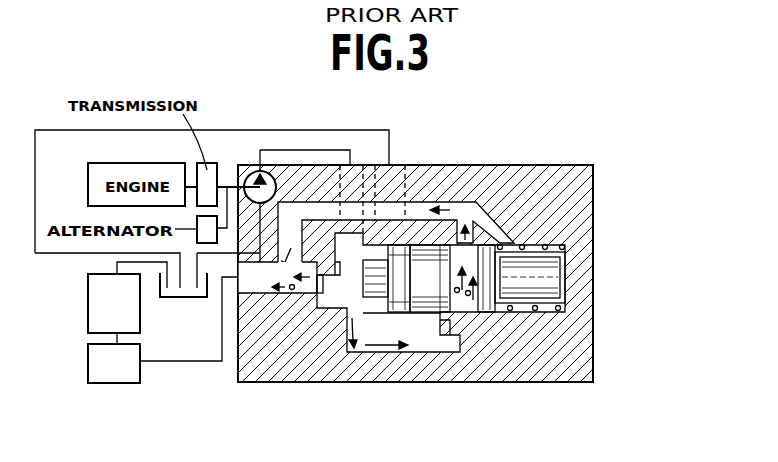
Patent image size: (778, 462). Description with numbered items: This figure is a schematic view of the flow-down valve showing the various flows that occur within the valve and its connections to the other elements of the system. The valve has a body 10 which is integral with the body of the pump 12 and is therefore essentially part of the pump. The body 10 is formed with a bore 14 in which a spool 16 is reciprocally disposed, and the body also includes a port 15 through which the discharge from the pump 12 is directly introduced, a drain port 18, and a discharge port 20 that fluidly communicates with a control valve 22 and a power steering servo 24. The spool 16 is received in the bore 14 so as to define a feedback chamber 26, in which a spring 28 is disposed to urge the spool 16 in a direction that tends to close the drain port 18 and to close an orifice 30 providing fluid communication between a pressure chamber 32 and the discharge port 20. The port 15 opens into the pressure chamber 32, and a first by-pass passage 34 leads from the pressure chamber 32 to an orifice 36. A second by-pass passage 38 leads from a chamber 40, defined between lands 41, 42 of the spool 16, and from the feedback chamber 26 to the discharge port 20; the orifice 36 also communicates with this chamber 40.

The body 10 is at (590, 383).
The pump 12 is at (246, 162).
The bore 14 is at (522, 314).
The port 15 is at (348, 177).
The spool 16 is at (538, 294).
The drain port 18 is at (395, 168).
The discharge port 20 is at (245, 288).
The control valve 22 is at (88, 368).
The power steering servo 24 is at (88, 320).
The feedback chamber 26 is at (567, 292).
The spring 28 is at (567, 250).
The orifice 30 is at (318, 292).
The pressure chamber 32 is at (340, 302).
The first by-pass passage 34 is at (353, 325).
The orifice 36 is at (445, 316).
The second by-pass passage 38 is at (425, 208).
The chamber 40 is at (465, 242).
The land 41 is at (427, 287).
The land 42 is at (487, 296).